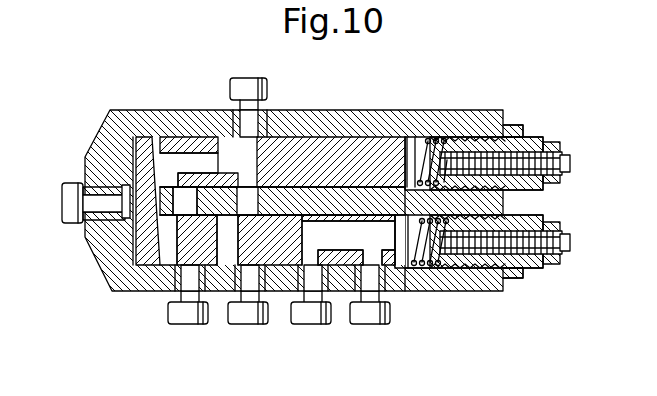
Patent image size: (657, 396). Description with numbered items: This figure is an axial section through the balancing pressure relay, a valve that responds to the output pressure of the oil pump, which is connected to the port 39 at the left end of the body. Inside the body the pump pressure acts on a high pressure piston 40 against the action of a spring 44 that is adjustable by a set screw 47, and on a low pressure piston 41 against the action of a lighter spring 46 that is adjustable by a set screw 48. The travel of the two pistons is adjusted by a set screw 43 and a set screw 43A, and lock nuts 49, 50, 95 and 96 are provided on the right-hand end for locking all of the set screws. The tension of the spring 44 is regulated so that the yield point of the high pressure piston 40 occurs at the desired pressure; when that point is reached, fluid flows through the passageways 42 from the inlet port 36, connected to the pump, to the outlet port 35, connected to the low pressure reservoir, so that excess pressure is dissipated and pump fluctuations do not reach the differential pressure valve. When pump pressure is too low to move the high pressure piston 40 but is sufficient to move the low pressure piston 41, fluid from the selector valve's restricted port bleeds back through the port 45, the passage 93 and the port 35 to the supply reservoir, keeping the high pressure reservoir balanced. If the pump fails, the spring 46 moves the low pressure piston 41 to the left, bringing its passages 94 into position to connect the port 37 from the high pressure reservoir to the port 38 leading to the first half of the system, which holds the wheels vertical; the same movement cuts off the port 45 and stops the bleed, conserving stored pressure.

The outlet port 35 is at (247, 78).
The inlet port 36 is at (196, 325).
The port 37 is at (315, 325).
The port 38 is at (376, 325).
The port 39 is at (63, 203).
The high pressure piston 40 is at (190, 134).
The low pressure piston 41 is at (410, 291).
The passageways 42 is at (187, 209).
The set screw 43 is at (568, 167).
The set screw 43A is at (568, 246).
The spring 44 is at (431, 136).
The port 45 is at (257, 325).
The spring 46 is at (456, 290).
The set screw 47 is at (545, 136).
The set screw 48 is at (534, 266).
The lock nut 49 is at (514, 126).
The lock nut 50 is at (514, 280).
The passage 93 is at (227, 240).
The passages 94 is at (348, 243).
The lock nut 95 is at (556, 182).
The lock nut 96 is at (558, 222).